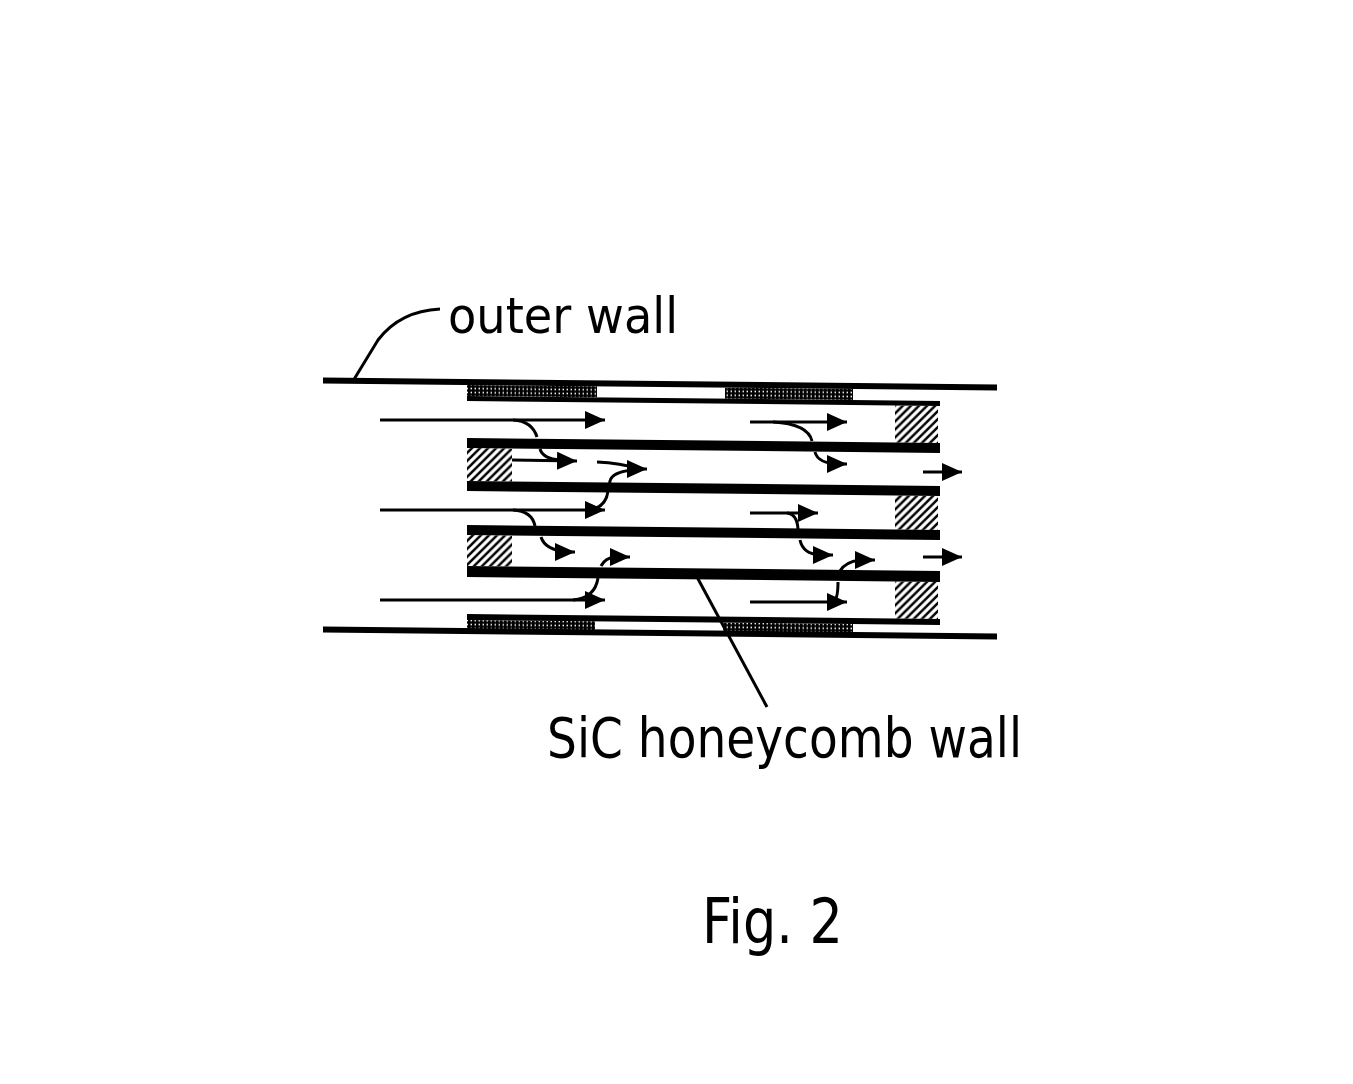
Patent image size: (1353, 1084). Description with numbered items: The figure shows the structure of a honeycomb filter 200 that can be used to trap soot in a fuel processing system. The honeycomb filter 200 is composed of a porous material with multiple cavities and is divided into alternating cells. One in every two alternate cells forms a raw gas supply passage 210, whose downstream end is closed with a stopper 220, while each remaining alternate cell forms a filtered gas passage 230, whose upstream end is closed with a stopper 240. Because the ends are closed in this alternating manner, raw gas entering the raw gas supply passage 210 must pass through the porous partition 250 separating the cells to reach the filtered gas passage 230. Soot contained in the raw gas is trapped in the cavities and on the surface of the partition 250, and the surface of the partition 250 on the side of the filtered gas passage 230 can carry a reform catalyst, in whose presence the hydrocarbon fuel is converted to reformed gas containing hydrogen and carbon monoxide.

The honeycomb filter 200 is at (670, 140).
The raw gas supply passage 210 is at (555, 499).
The stopper 220 is at (921, 404).
The filtered gas passage 230 is at (997, 471).
The stopper 240 is at (470, 553).
The partition 250 is at (470, 463).